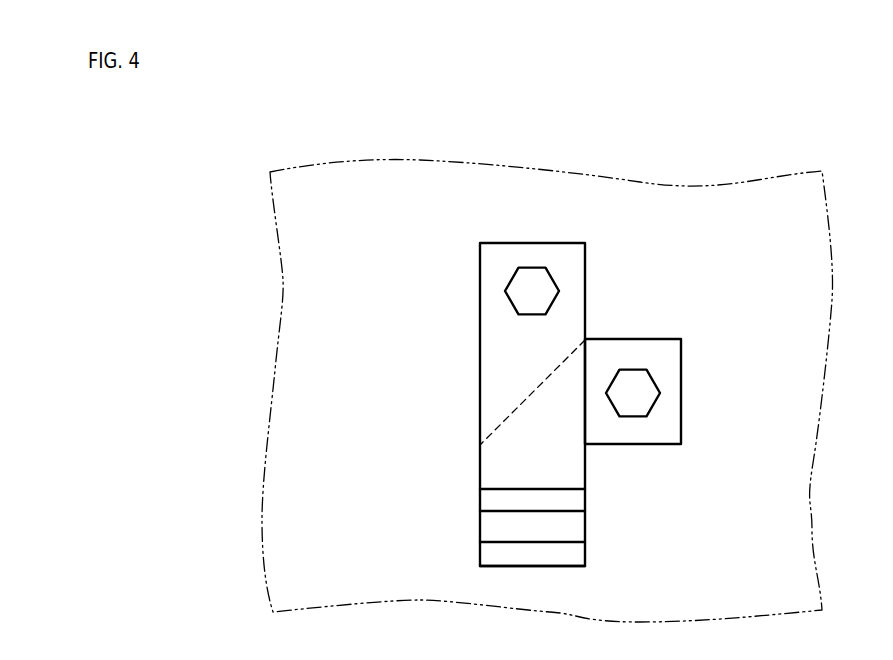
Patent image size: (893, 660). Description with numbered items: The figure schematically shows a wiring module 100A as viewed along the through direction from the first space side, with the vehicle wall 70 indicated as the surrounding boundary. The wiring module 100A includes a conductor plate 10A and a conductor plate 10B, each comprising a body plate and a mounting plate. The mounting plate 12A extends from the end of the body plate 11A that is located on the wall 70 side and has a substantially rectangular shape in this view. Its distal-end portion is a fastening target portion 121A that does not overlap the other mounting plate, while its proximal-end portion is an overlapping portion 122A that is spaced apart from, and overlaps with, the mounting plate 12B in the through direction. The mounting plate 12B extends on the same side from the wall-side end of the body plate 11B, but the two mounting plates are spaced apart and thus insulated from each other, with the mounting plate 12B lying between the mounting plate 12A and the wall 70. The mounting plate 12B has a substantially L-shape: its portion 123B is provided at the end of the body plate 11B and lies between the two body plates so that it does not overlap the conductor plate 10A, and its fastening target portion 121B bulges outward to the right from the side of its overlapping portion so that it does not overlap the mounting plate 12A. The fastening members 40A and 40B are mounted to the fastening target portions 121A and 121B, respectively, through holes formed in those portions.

The wall 70 is at (700, 186).
The wiring module 100A is at (692, 293).
The conductor plate 10A is at (336, 383).
The mounting plate 12A is at (398, 323).
The fastening target portion 121A is at (485, 343).
The overlapping portion 122A is at (486, 468).
The body plate 11A is at (486, 500).
The fastening member 40A is at (531, 266).
The conductor plate 10B is at (747, 488).
The mounting plate 12B is at (675, 462).
The fastening target portion 121B is at (648, 437).
The portion 123B is at (570, 525).
The body plate 11B is at (580, 553).
The fastening member 40B is at (633, 369).